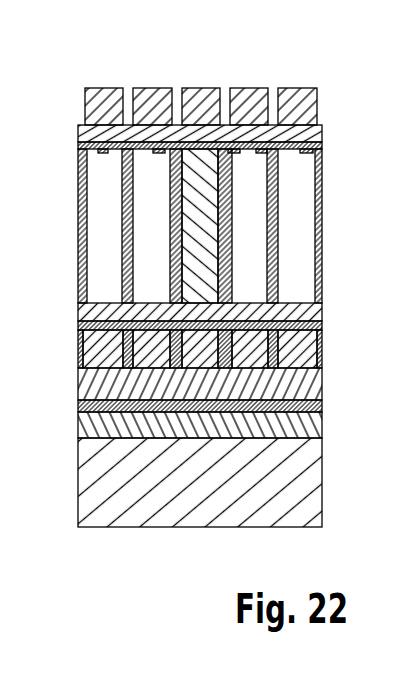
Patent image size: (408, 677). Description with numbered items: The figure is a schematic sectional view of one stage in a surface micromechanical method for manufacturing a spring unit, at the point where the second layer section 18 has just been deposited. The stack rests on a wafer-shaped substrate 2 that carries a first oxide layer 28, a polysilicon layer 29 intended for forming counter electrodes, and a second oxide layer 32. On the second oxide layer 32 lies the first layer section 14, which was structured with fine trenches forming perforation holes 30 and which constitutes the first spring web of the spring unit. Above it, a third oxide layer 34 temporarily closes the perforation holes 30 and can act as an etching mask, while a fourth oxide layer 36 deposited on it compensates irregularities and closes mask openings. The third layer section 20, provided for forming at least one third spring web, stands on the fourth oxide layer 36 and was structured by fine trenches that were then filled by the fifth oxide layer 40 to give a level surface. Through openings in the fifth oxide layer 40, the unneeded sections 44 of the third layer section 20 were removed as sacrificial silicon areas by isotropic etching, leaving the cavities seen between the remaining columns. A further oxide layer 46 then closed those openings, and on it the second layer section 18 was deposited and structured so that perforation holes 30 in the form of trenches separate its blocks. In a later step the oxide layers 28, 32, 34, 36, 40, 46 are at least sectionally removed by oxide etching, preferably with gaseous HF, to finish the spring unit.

The substrate 2 is at (105, 478).
The first layer section 14 is at (102, 348).
The second layer section 18 is at (250, 95).
The third layer section 20 is at (165, 212).
The first oxide layer 28 is at (95, 428).
The polysilicon layer 29 is at (93, 407).
The perforation holes 30 is at (275, 93).
The second oxide layer 32 is at (105, 385).
The third oxide layer 34 is at (103, 324).
The fourth oxide layer 36 is at (97, 310).
The fifth oxide layer 40 is at (120, 152).
The unneeded sections 44 is at (152, 178).
The further oxide layer 46 is at (108, 137).